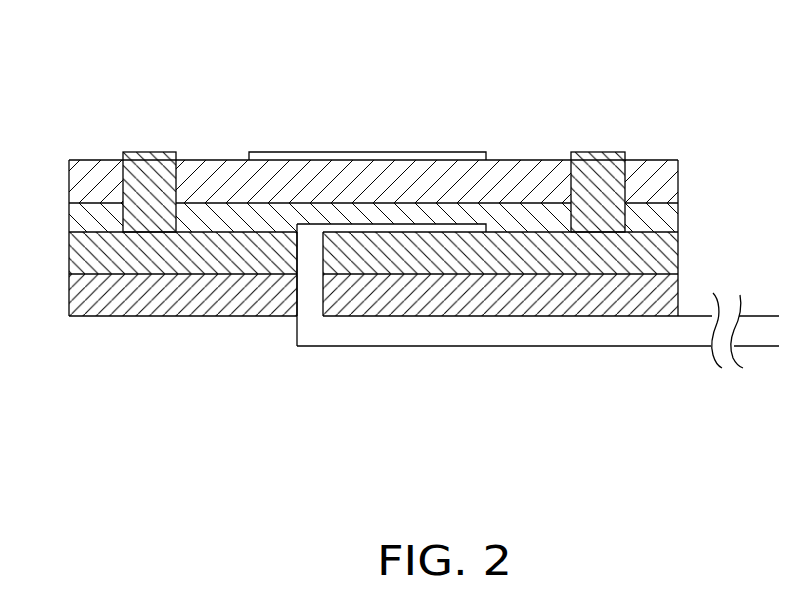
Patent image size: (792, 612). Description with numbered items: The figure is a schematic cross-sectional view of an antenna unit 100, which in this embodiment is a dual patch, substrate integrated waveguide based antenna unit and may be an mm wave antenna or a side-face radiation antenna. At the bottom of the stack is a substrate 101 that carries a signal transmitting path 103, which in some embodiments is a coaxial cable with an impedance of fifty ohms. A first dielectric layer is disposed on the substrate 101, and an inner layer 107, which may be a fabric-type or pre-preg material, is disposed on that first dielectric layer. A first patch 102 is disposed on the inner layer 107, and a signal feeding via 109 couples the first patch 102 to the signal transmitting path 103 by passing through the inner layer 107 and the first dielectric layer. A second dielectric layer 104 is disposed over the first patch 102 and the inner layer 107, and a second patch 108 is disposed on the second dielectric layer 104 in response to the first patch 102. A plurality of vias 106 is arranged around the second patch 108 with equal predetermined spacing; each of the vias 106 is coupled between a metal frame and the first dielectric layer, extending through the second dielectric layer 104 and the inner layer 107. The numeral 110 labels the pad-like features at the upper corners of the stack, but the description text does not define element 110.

The antenna unit 100 is at (415, 45).
The substrate 101 is at (678, 293).
The first patch 102 is at (475, 223).
The signal transmitting path 103 is at (607, 346).
The second dielectric layer 104 is at (680, 215).
The vias 106 is at (177, 173).
The inner layer 107 is at (680, 247).
The second patch 108 is at (481, 152).
The signal feeding via 109 is at (297, 262).
The bonding pad 110 is at (149, 152).